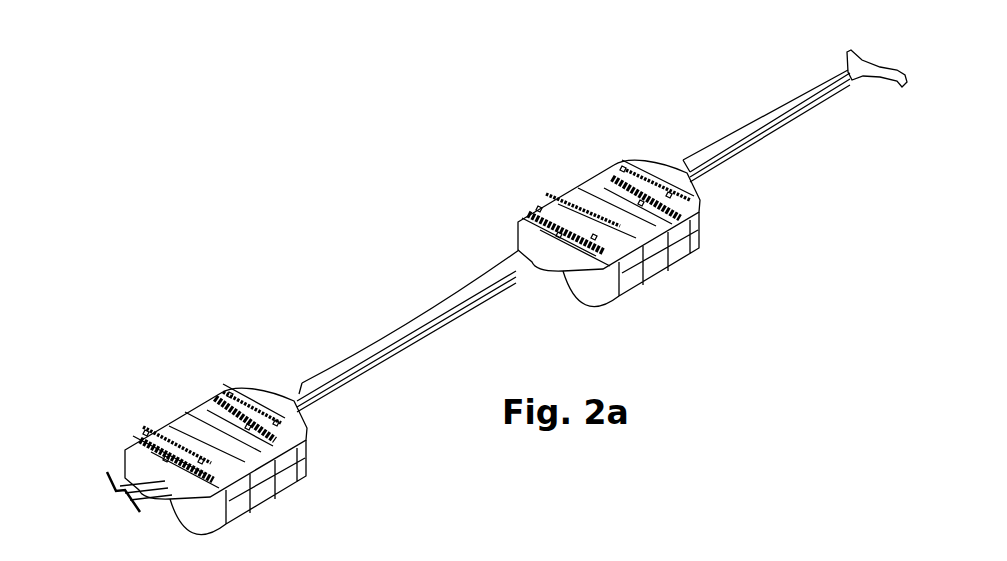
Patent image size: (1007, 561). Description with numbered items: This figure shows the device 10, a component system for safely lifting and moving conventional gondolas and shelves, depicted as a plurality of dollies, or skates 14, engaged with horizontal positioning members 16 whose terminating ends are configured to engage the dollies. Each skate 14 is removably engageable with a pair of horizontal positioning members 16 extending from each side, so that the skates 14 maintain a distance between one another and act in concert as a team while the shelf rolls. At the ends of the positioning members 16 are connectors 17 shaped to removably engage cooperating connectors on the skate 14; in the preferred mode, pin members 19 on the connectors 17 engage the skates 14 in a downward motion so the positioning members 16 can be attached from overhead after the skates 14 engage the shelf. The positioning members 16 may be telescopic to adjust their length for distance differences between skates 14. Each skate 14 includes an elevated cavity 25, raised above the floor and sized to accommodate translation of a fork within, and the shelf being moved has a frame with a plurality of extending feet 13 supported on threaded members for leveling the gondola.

The device 10 is at (442, 207).
The extending feet 13 is at (566, 204).
The skate 14 is at (698, 213).
The horizontal positioning members 16 is at (462, 306).
The connectors 17 is at (514, 263).
The pin members 19 is at (587, 263).
The elevated cavity 25 is at (567, 196).